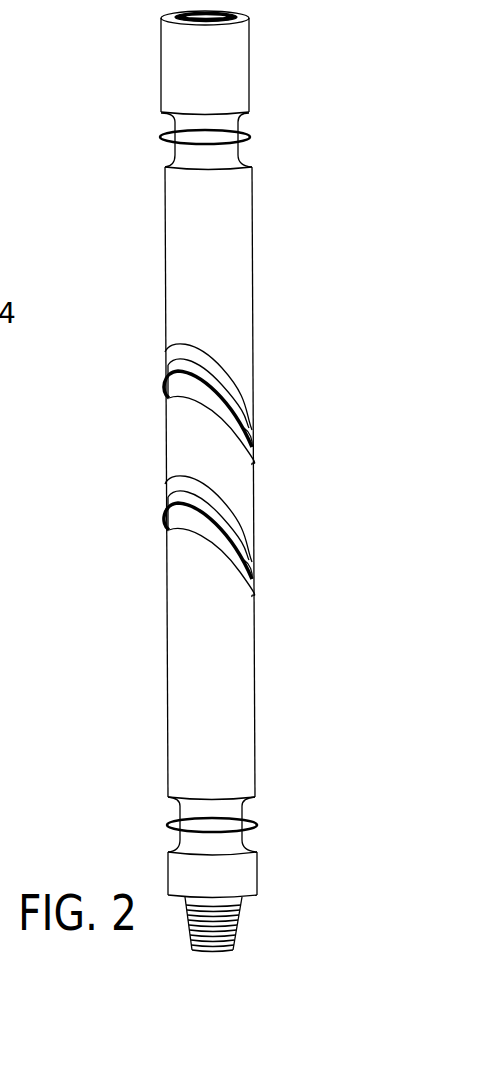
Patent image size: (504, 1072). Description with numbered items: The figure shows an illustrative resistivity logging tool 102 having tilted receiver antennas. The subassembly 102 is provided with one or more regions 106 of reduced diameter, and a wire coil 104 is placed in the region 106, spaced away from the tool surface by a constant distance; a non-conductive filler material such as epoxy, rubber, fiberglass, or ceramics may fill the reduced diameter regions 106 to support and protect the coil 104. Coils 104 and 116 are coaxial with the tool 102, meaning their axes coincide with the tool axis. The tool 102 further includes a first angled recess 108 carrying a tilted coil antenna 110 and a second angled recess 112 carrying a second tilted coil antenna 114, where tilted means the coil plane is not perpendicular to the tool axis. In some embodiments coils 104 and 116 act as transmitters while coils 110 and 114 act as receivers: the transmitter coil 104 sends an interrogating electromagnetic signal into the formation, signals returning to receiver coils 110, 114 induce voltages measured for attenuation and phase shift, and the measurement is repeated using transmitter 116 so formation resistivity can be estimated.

The resistivity tool 102 is at (162, 98).
The wire coil 104 is at (161, 136).
The region of reduced diameter 106 is at (176, 152).
The first angled recess 108 is at (165, 362).
The tilted coil antenna 110 is at (167, 385).
The second angled recess 112 is at (165, 495).
The second tilted coil antenna 114 is at (168, 517).
The coil 116 is at (170, 825).